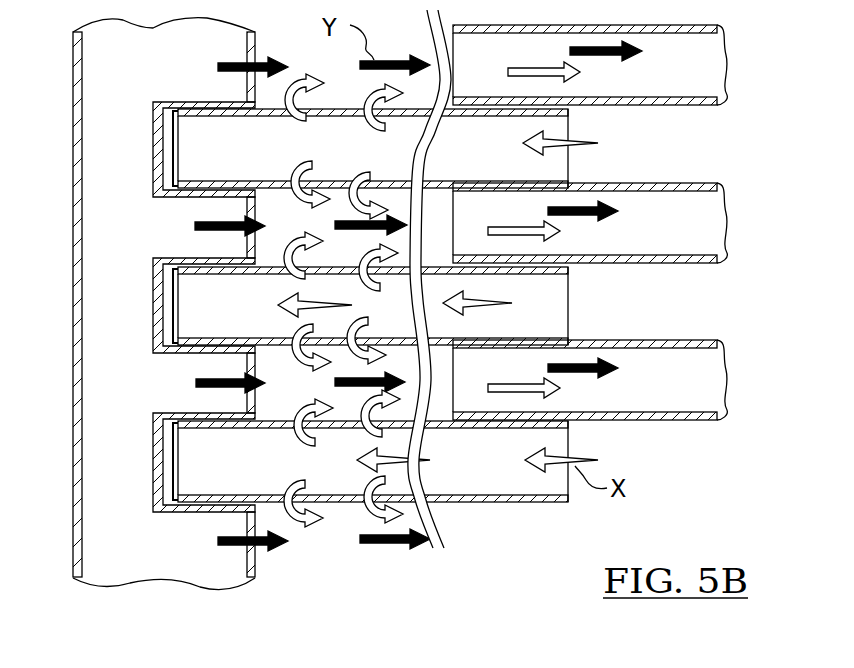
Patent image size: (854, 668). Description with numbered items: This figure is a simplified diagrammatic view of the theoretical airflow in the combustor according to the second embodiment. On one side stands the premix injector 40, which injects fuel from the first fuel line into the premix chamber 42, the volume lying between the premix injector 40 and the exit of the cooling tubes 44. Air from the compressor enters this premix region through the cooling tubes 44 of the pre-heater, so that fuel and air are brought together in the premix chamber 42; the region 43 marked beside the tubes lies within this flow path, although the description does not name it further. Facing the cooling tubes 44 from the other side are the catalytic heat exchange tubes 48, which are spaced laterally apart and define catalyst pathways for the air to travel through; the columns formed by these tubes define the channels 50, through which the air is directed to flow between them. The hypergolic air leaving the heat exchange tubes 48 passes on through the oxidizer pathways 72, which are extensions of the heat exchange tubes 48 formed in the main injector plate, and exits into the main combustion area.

The premix injector 40 is at (113, 558).
The premix chamber 42 is at (280, 402).
The space / flow chamber 43 is at (340, 553).
The cooling tubes 44 is at (210, 472).
The heat exchange tubes 48 is at (702, 380).
The channels 50 is at (693, 304).
The oxidizer pathways 72 is at (255, 550).